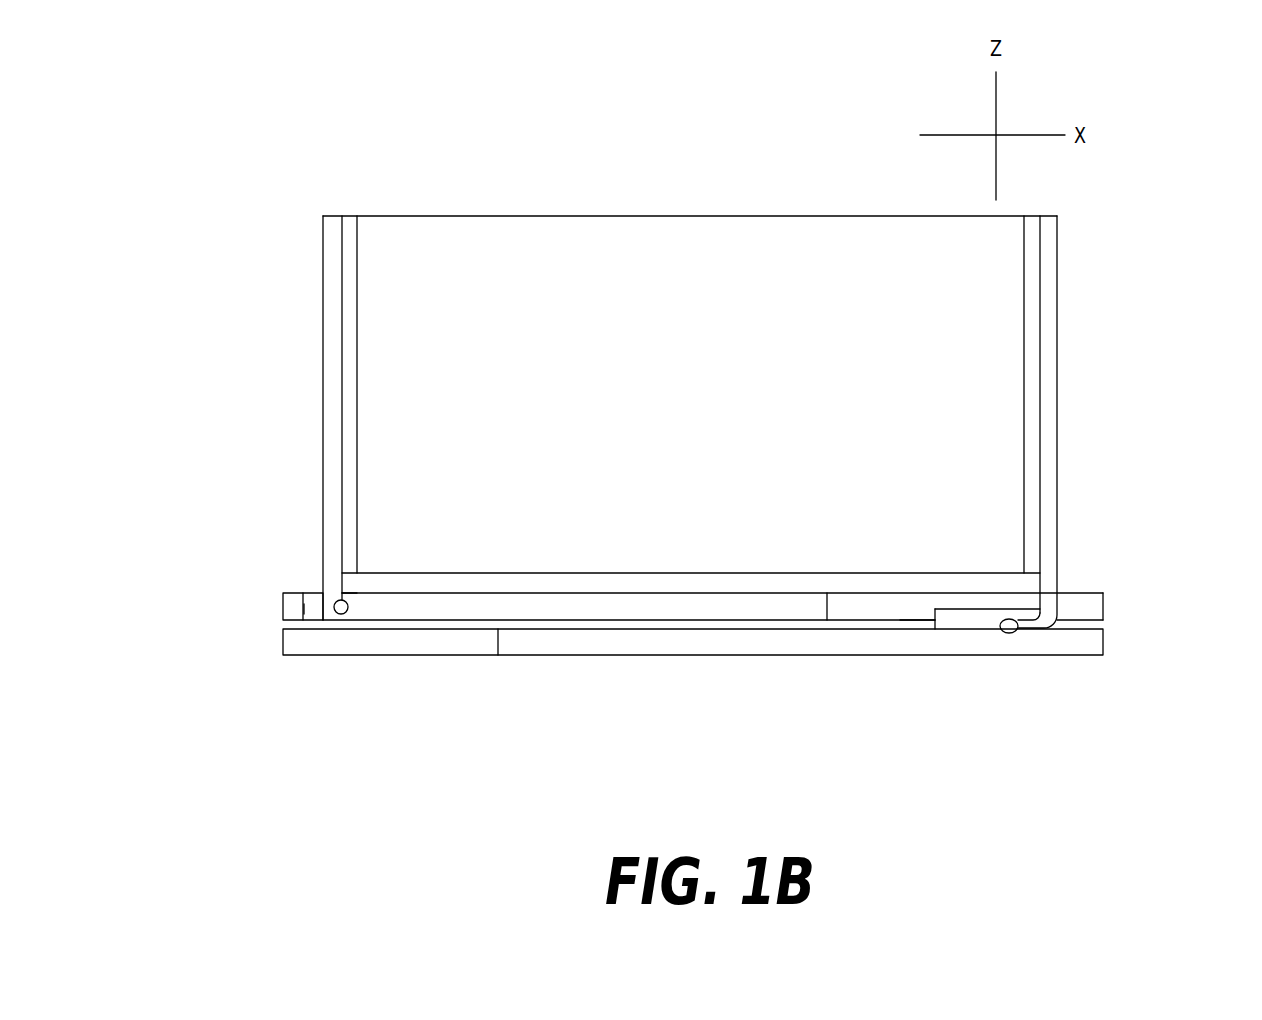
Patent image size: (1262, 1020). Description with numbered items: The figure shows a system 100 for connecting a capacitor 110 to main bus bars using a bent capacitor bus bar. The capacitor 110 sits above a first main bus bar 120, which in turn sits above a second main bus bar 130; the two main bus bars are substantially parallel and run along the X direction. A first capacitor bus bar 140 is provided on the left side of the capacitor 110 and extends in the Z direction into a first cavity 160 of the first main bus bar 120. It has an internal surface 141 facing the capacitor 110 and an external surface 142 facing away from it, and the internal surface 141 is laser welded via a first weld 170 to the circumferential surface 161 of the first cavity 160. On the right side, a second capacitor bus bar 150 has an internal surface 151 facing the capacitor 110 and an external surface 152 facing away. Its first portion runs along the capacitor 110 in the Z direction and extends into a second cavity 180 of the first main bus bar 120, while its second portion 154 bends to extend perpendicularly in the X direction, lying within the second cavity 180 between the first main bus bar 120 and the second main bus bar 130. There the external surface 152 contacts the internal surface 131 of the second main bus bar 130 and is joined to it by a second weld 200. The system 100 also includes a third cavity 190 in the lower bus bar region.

The system 100 is at (138, 119).
The capacitor 110 is at (653, 250).
The first main bus bar 120 is at (283, 605).
The second main bus bar 130 is at (762, 603).
The internal surface 131 is at (920, 628).
The first capacitor bus bar 140 is at (325, 416).
The internal surface 141 is at (322, 289).
The external surface 142 is at (323, 430).
The second capacitor bus bar 150 is at (1099, 418).
The internal surface 151 is at (1058, 280).
The external surface 152 is at (1058, 487).
The second portion 154 is at (995, 609).
The first cavity 160 is at (300, 610).
The circumferential surface 161 is at (342, 592).
The first weld 170 is at (341, 614).
The second cavity 180 is at (846, 614).
The third cavity 190 is at (1080, 655).
The second weld 200 is at (1008, 633).